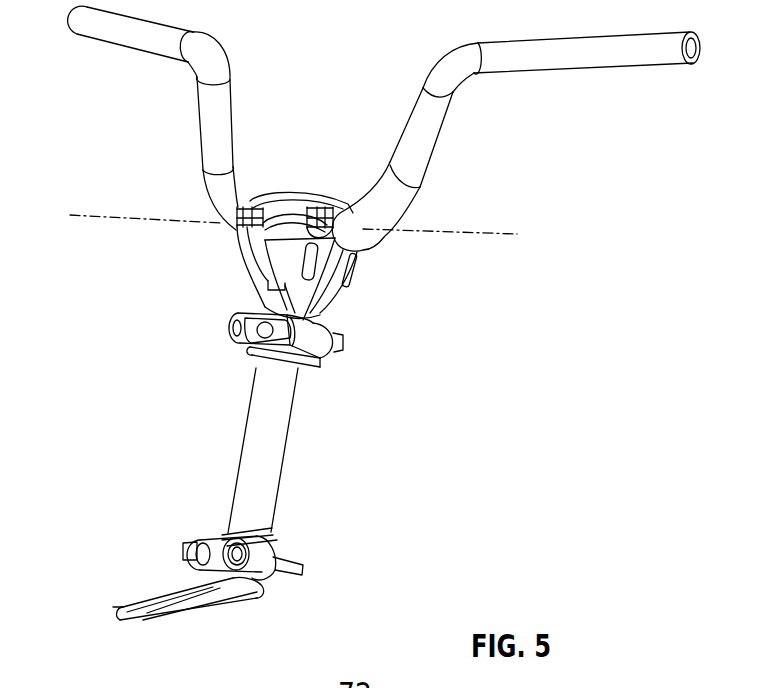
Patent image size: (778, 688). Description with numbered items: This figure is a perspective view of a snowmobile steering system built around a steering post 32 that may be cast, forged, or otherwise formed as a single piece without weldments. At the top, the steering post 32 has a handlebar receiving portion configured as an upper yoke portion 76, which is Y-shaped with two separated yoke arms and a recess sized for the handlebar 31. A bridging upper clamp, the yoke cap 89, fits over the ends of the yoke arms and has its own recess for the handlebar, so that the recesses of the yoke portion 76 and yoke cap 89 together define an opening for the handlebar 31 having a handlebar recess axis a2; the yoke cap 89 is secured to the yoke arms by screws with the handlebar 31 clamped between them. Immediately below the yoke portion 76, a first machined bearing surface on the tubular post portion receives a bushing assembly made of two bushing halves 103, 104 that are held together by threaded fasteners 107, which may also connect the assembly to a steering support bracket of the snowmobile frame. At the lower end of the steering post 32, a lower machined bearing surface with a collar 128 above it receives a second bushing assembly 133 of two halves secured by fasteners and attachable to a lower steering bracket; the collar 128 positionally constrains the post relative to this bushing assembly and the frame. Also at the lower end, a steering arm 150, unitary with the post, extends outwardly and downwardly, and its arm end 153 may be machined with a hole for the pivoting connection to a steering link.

The handlebar 31 is at (423, 137).
The steering post 32 is at (287, 457).
The upper yoke portion 76 is at (310, 292).
The yoke cap 89 is at (288, 205).
The bushing half 103 is at (325, 342).
The bushing half 104 is at (232, 333).
The threaded fasteners 107 is at (344, 343).
The collar 128 is at (232, 535).
The second bushing assembly 133 is at (277, 548).
The steering arm 150 is at (177, 616).
The arm end 153 is at (120, 607).
The handlebar recess axis a2 is at (447, 233).